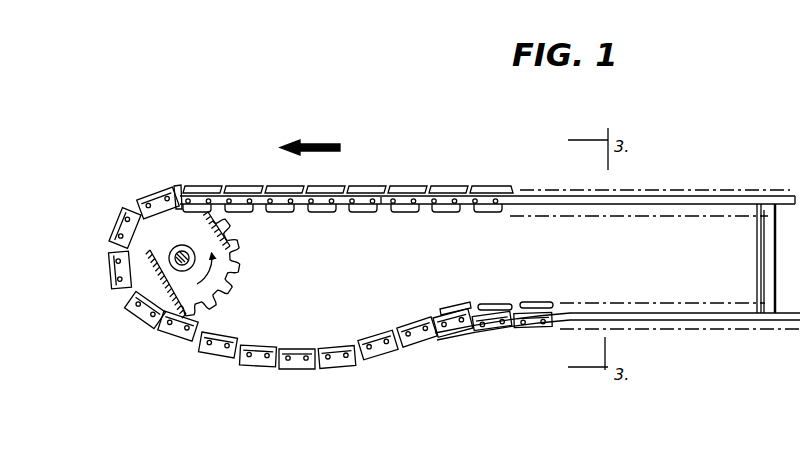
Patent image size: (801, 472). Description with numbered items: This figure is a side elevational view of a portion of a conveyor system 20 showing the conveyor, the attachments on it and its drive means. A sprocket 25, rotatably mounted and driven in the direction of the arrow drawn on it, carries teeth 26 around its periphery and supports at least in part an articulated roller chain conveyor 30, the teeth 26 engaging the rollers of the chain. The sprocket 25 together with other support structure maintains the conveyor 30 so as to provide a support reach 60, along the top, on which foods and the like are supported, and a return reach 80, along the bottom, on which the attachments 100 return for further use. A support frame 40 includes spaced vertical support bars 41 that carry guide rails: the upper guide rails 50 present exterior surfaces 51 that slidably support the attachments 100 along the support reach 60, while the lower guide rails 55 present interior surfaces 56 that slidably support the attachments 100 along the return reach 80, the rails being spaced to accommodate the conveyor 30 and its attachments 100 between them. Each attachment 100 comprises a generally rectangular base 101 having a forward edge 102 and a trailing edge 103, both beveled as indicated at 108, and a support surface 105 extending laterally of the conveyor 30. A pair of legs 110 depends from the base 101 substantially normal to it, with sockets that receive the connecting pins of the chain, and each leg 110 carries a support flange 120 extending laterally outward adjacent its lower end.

The conveyor system 20 is at (150, 163).
The sprocket 25 is at (242, 248).
The teeth 26 is at (236, 268).
The articulated roller chain conveyor 30 is at (423, 215).
The support frame 40 is at (668, 220).
The vertical support bars 41 is at (757, 248).
The upper guide rails 50 is at (582, 204).
The exterior surfaces 51 is at (670, 191).
The lower guide rails 55 is at (652, 312).
The interior surfaces 56 is at (563, 304).
The support reach 60 is at (462, 139).
The return reach 80 is at (492, 374).
The attachments 100 is at (485, 216).
The base 101 is at (458, 191).
The forward edge 102 is at (175, 189).
The trailing edge 103 is at (140, 199).
The support surface 105 is at (365, 187).
The bevel 108 is at (178, 194).
The legs 110 is at (384, 209).
The support flange 120 is at (367, 209).